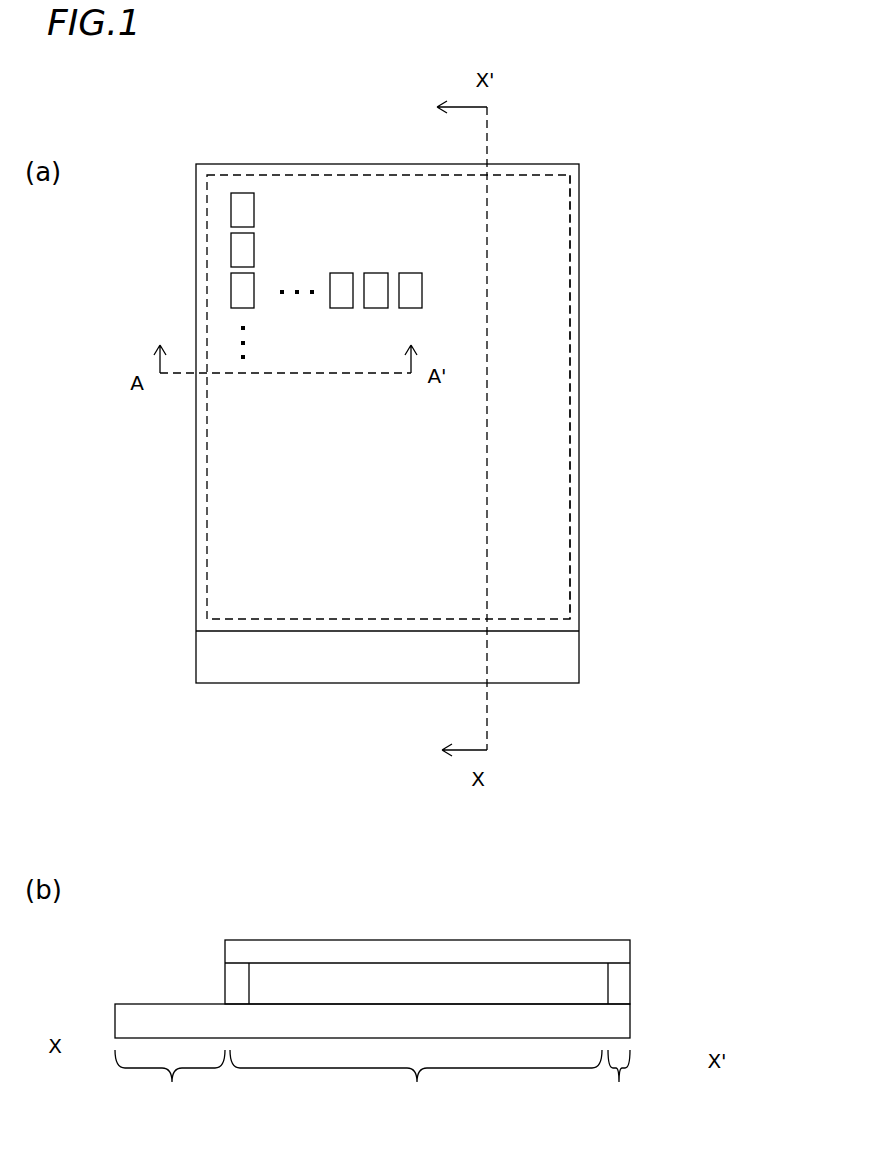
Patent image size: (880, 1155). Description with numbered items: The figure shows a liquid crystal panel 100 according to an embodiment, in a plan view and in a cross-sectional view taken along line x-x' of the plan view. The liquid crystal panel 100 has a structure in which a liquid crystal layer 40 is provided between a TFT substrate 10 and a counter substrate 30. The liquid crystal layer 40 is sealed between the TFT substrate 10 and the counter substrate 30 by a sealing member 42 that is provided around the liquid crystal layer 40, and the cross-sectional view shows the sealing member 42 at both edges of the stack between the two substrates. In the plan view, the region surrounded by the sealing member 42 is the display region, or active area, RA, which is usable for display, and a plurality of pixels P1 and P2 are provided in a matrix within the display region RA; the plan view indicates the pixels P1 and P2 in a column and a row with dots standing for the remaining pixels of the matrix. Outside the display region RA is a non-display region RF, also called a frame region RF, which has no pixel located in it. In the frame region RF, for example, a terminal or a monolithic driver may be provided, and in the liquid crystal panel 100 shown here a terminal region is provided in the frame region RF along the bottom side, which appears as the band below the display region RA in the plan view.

The liquid crystal panel 100 is at (662, 160).
The TFT substrate 10 is at (622, 1028).
The counter substrate 30 is at (617, 940).
The liquid crystal layer 40 is at (438, 975).
The sealing member 42 is at (573, 288).
The pixel P1 is at (236, 291).
The pixel P2 is at (341, 280).
The display region (active area) RA is at (532, 355).
The non-display region (frame region) RF is at (573, 660).